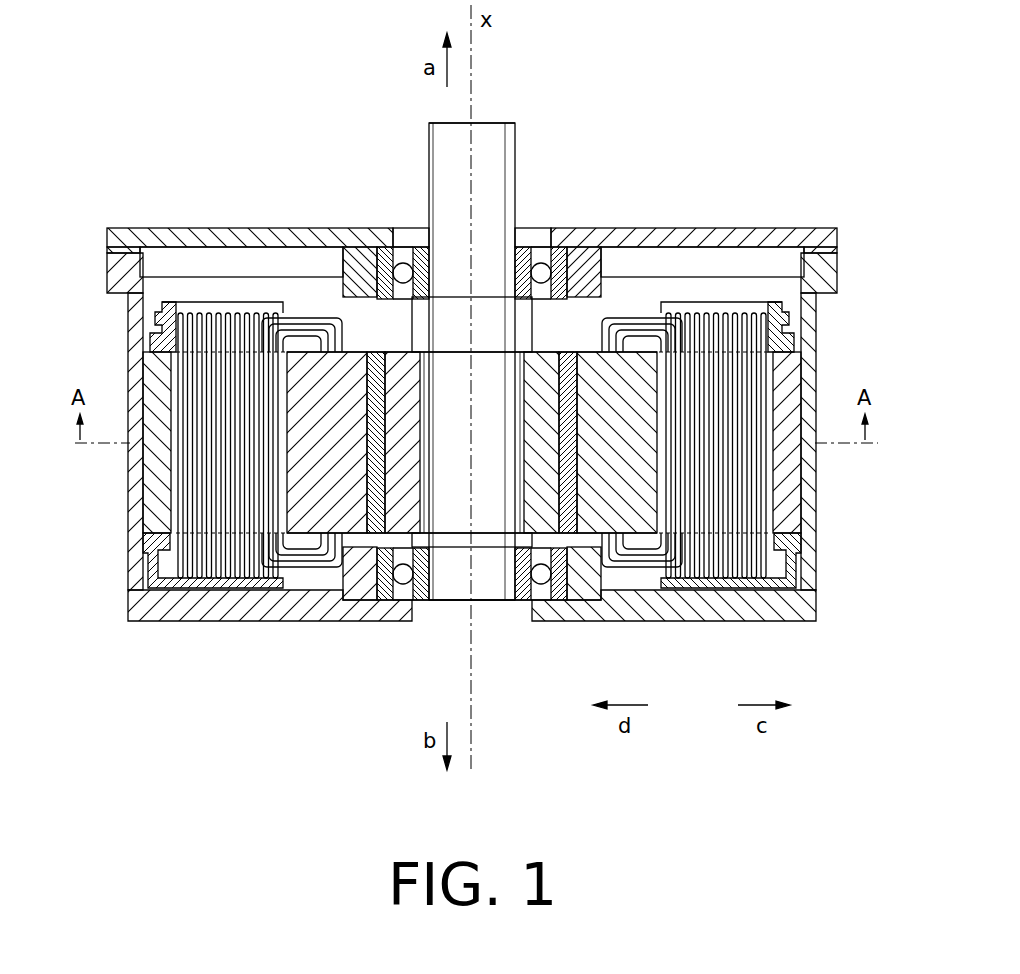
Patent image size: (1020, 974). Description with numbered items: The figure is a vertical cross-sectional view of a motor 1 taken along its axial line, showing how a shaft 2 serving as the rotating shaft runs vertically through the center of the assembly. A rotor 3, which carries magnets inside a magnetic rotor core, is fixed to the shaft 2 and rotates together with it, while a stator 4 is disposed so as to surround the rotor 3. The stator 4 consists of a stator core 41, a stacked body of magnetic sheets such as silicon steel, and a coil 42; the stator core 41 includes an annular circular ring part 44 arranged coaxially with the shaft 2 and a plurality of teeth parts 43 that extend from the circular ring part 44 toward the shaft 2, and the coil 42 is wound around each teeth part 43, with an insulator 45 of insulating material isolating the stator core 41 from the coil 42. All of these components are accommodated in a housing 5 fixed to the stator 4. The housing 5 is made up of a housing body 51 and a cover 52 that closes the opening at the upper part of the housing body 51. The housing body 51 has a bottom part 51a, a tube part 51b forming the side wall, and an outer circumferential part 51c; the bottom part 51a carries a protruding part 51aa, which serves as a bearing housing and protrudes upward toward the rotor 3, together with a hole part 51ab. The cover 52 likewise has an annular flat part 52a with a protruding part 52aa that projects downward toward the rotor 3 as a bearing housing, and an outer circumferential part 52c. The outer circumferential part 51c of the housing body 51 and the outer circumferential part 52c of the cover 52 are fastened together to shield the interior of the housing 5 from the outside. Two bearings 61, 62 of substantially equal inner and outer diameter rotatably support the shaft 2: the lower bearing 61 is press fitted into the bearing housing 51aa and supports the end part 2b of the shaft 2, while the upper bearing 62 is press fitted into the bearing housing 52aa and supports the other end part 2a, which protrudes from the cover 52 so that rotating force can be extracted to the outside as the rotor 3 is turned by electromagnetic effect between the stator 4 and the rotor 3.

The motor 1 is at (696, 108).
The shaft 2 is at (488, 183).
The end part 2a is at (518, 150).
The end part 2b is at (447, 587).
The rotor 3 is at (628, 302).
The stator 4 is at (215, 697).
The stator core 41 is at (255, 665).
The coil 42 is at (203, 467).
The teeth part 43 is at (275, 507).
The circular ring part 44 is at (155, 522).
The insulator 45 is at (660, 590).
The housing 5 is at (865, 131).
The housing body 51 is at (815, 312).
The bottom part 51a is at (727, 625).
The protruding part 51aa is at (357, 585).
The hole part 51ab is at (487, 612).
The tube part 51b is at (815, 342).
The outer circumferential part 51c is at (110, 275).
The cover 52 is at (803, 240).
The flat part 52a is at (232, 236).
The protruding part 52aa is at (355, 282).
The outer circumferential part 52c is at (118, 243).
The bearing 61 is at (563, 587).
The bearing 62 is at (575, 272).